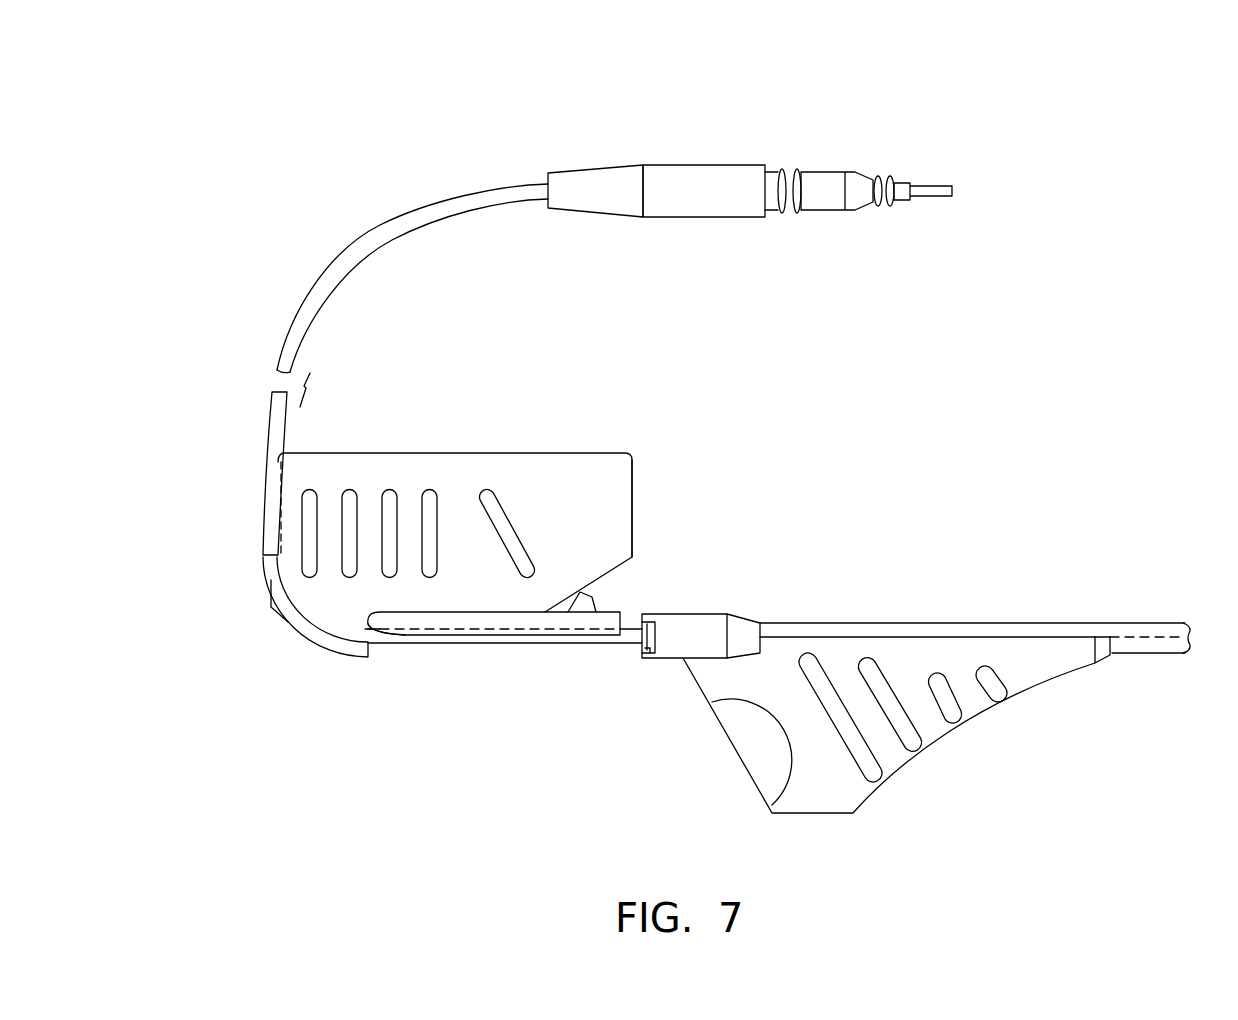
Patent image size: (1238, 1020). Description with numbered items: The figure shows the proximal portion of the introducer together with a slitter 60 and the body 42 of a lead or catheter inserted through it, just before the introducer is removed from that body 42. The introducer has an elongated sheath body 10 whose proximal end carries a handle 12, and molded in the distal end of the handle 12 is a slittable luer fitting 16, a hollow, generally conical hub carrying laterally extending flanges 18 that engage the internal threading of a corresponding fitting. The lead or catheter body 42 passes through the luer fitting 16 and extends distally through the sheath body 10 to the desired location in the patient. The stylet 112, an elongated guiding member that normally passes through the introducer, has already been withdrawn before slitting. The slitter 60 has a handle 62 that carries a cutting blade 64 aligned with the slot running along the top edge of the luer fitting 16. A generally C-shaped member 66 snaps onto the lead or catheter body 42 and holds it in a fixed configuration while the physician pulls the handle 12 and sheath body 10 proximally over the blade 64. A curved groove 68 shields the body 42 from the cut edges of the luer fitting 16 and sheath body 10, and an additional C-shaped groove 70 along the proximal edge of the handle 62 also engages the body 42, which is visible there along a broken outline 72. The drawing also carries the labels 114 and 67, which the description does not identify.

The connector 114 is at (709, 158).
The stylet 112 is at (410, 216).
The C-shaped groove 70 is at (273, 468).
The broken outline 72 is at (281, 483).
The slitter 60 is at (487, 453).
The handle 62 is at (584, 465).
The cutting blade 64 is at (590, 601).
The curved groove 68 is at (314, 616).
The C-shaped member 66 is at (493, 630).
The rod 67 is at (553, 630).
The body of lead or catheter 42 is at (393, 637).
The slittable luer fitting 16 is at (707, 617).
The laterally extending flanges 18 is at (683, 660).
The sheath body 10 is at (993, 628).
The handle 12 is at (835, 797).